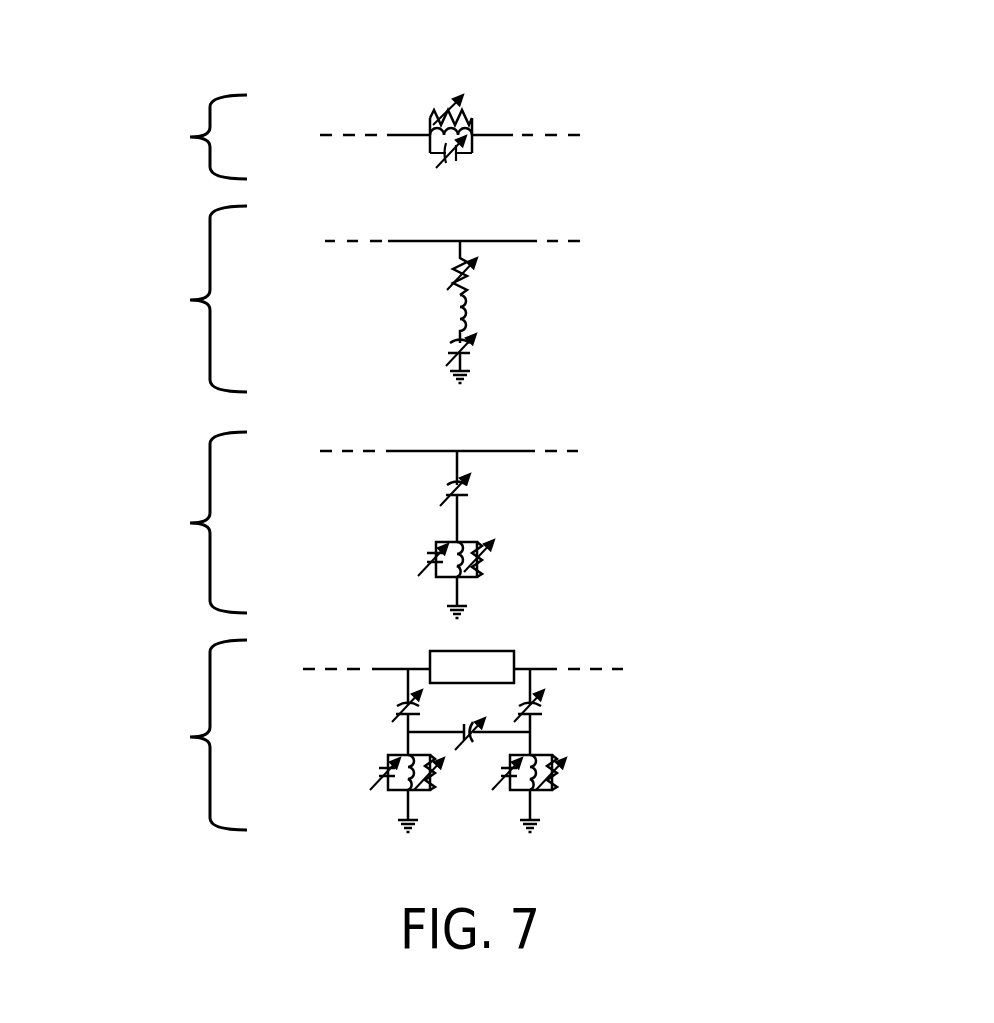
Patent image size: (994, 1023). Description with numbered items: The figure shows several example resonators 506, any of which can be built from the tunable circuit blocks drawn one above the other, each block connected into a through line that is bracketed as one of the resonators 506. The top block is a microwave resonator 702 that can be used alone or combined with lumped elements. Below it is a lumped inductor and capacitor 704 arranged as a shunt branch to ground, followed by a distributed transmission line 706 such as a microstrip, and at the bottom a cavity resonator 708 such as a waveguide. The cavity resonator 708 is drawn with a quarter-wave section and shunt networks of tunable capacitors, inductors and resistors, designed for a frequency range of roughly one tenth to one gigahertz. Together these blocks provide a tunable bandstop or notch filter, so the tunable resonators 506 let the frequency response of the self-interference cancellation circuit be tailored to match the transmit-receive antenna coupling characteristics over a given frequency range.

The microwave resonator 702 is at (536, 70).
The inductor and capacitor 704 is at (539, 213).
The distributed transmission line 706 is at (541, 428).
The cavity resonator 708 is at (541, 636).
The resonators 506 is at (167, 462).